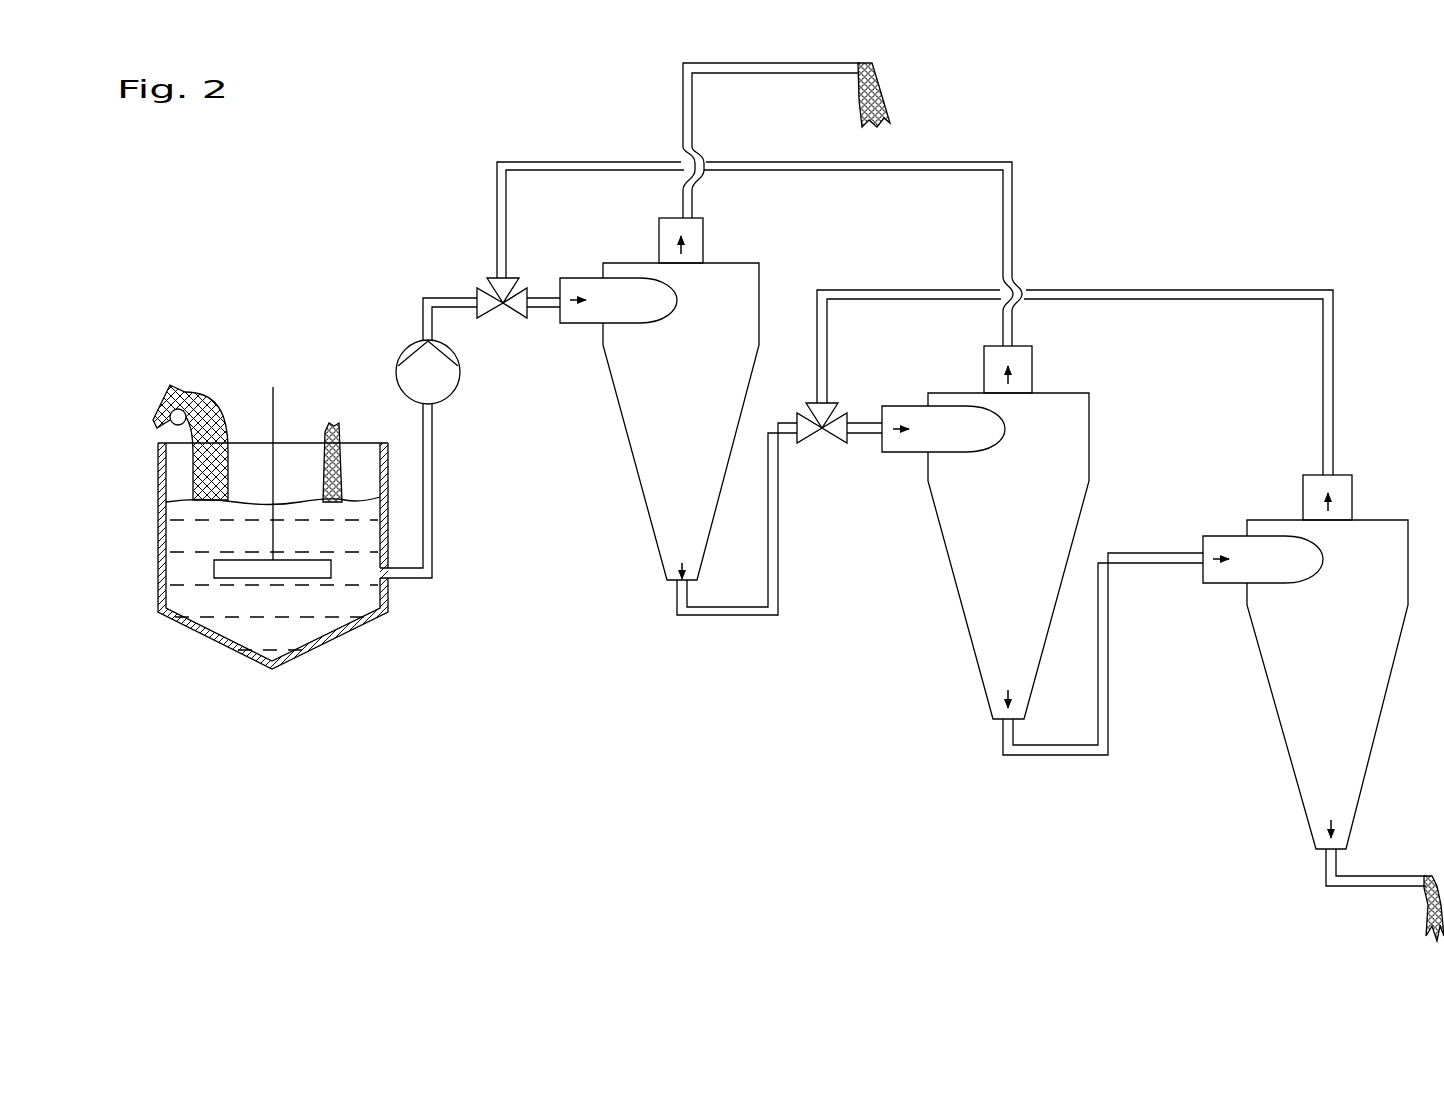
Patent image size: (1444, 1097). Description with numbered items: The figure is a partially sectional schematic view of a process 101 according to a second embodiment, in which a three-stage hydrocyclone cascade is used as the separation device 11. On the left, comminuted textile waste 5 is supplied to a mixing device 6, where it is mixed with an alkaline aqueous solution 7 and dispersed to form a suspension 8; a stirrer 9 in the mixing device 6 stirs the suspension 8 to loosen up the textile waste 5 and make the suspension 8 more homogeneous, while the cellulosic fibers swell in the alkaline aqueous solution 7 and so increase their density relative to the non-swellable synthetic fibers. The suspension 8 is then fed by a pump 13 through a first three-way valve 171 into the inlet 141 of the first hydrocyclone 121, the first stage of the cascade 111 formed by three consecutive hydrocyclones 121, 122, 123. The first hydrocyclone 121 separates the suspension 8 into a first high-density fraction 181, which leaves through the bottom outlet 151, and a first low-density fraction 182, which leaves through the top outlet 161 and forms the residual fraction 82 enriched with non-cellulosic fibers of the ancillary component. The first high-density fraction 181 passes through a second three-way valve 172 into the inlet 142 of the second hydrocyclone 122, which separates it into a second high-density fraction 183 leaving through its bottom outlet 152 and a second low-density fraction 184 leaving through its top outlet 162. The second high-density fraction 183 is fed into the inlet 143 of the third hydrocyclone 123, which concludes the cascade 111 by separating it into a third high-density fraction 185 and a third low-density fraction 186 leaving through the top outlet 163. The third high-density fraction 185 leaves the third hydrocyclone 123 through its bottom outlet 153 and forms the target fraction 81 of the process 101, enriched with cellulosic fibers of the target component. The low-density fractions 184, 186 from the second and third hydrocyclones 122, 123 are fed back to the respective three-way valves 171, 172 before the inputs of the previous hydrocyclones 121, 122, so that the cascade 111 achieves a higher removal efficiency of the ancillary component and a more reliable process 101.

The process 101 is at (1322, 187).
The hydrocyclone cascade 111 is at (703, 788).
The separation device 11 is at (997, 523).
The comminuted textile waste 5 is at (182, 393).
The mixing device 6 is at (150, 603).
The alkaline aqueous solution 7 is at (333, 423).
The suspension 8 is at (297, 620).
The stirrer 9 is at (262, 393).
The pump 13 is at (445, 380).
The first hydrocyclone 121 is at (633, 401).
The second hydrocyclone 122 is at (953, 535).
The third hydrocyclone 123 is at (1278, 650).
The inlet 141 is at (583, 292).
The inlet 142 is at (898, 404).
The inlet 143 is at (1231, 545).
The bottom outlet 151 is at (671, 565).
The bottom outlet 152 is at (993, 695).
The bottom outlet 153 is at (1316, 828).
The top outlet 161 is at (710, 243).
The top outlet 162 is at (1035, 370).
The top outlet 163 is at (1354, 498).
The first three-way valve 171 is at (512, 312).
The second three-way valve 172 is at (826, 444).
The first high-density fraction 181 is at (728, 625).
The first low-density fraction 182 is at (694, 126).
The second high-density fraction 183 is at (1057, 760).
The second low-density fraction 184 is at (1015, 241).
The third high-density fraction 185 is at (1355, 884).
The third low-density fraction 186 is at (1330, 404).
The target fraction 81 is at (1426, 870).
The residual fraction 82 is at (889, 98).